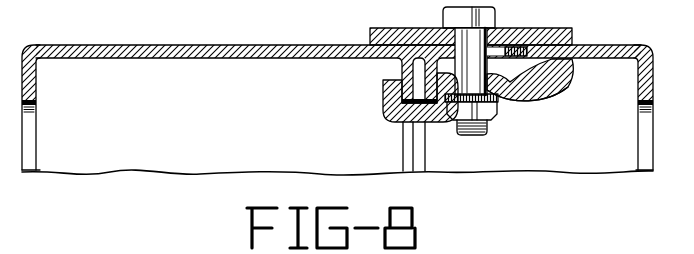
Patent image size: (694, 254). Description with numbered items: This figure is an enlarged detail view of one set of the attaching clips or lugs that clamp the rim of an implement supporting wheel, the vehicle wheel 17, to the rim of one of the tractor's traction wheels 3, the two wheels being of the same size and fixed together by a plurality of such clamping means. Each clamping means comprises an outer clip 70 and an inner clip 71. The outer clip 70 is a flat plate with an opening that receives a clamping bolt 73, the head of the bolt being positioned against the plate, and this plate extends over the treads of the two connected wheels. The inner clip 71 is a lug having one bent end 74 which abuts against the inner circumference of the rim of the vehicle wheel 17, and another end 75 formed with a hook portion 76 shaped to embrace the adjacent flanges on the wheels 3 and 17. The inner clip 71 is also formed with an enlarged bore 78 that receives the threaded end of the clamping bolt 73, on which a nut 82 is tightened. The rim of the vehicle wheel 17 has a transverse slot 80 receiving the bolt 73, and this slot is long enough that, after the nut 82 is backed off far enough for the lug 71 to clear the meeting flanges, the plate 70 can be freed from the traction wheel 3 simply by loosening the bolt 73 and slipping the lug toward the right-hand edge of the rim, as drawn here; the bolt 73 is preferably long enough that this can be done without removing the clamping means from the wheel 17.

The traction wheel 3 is at (328, 45).
The vehicle wheel 17 is at (650, 54).
The outer clip 70 is at (493, 84).
The inner clip 71 is at (545, 99).
The clamping bolt 73 is at (496, 45).
The bent end 74 is at (552, 96).
The other end 75 is at (430, 123).
The hook portion 76 is at (387, 97).
The enlarged bore 78 is at (491, 103).
The transverse slot 80 is at (517, 42).
The nut 82 is at (463, 110).